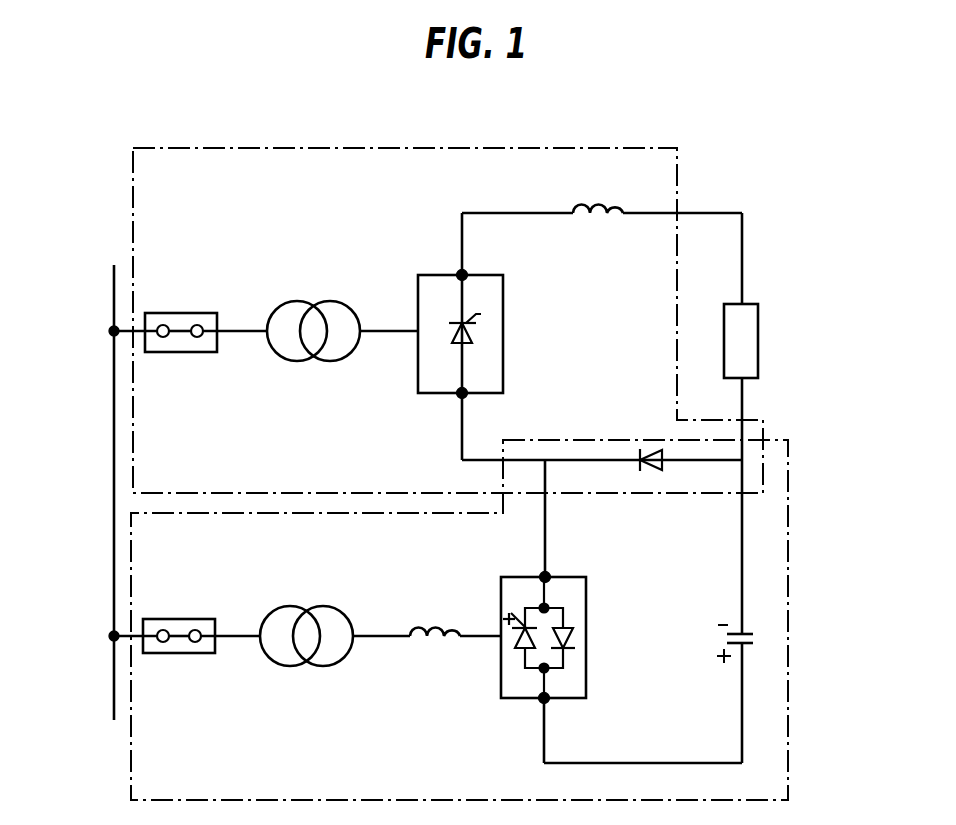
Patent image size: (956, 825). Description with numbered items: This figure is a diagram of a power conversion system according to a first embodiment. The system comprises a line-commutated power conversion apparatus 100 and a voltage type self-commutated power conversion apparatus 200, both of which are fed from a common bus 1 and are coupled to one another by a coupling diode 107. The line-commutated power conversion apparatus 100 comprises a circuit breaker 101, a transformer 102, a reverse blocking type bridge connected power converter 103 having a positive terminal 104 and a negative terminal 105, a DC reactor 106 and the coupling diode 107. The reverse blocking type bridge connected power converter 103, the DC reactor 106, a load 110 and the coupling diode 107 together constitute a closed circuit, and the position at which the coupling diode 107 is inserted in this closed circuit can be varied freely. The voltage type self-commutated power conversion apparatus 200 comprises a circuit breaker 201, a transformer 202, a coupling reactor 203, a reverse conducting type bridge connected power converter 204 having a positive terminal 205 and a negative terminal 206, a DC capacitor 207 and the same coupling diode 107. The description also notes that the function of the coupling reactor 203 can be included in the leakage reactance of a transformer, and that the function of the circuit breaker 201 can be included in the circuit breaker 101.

The power system bus 1 is at (114, 492).
The line-commutated power conversion apparatus 100 is at (535, 147).
The circuit breaker 101 is at (178, 312).
The transformer 102 is at (317, 302).
The reverse blocking type bridge connected power converter 103 is at (503, 320).
The positive terminal 104 is at (465, 272).
The negative terminal 105 is at (455, 402).
The DC reactor 106 is at (597, 218).
The coupling diode 107 is at (651, 447).
The load 110 is at (757, 305).
The voltage type self-commutated power conversion apparatus 200 is at (255, 797).
The circuit breaker 201 is at (175, 617).
The transformer 202 is at (305, 613).
The coupling reactor 203 is at (438, 638).
The reverse conducting type bridge connected power converter 204 is at (587, 625).
The positive terminal 205 is at (536, 702).
The negative terminal 206 is at (548, 574).
The DC capacitor 207 is at (721, 640).